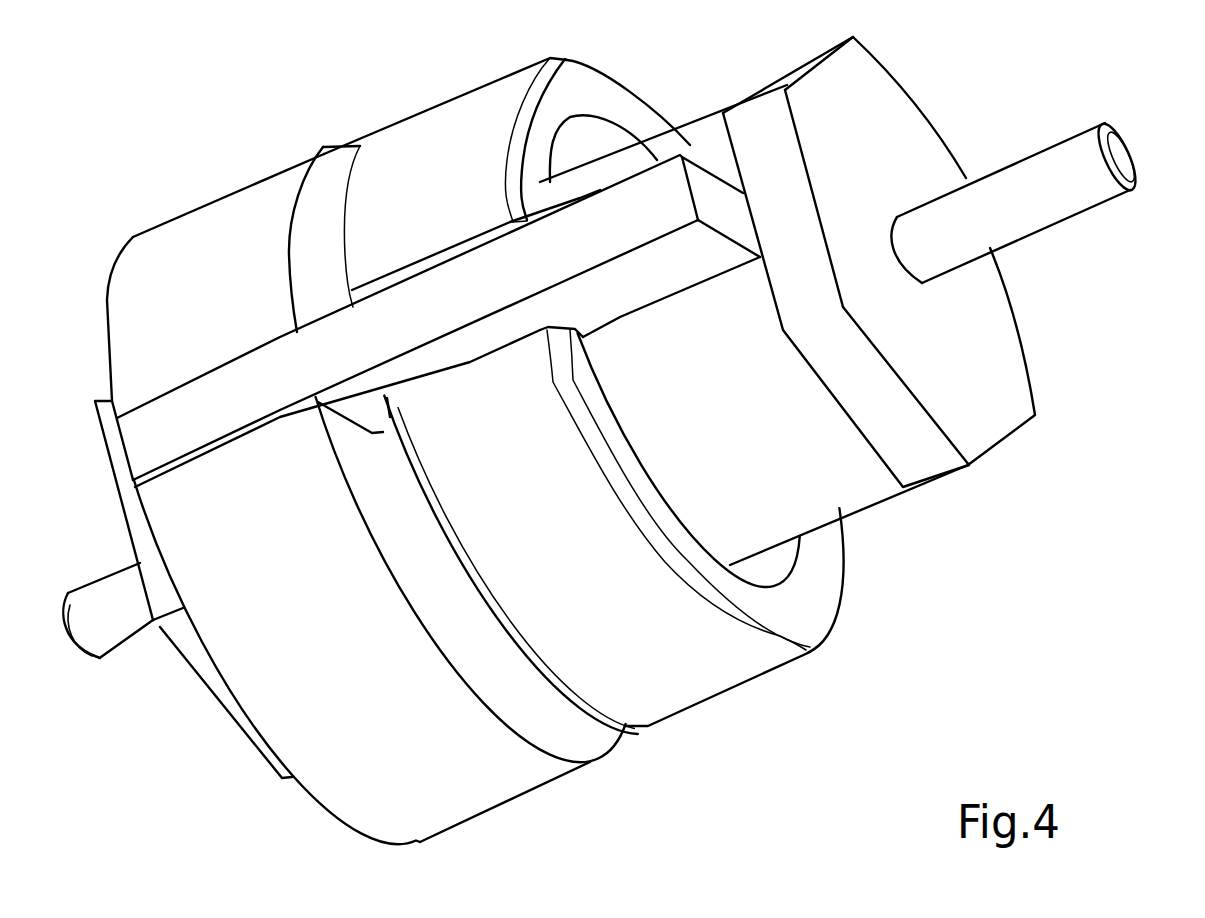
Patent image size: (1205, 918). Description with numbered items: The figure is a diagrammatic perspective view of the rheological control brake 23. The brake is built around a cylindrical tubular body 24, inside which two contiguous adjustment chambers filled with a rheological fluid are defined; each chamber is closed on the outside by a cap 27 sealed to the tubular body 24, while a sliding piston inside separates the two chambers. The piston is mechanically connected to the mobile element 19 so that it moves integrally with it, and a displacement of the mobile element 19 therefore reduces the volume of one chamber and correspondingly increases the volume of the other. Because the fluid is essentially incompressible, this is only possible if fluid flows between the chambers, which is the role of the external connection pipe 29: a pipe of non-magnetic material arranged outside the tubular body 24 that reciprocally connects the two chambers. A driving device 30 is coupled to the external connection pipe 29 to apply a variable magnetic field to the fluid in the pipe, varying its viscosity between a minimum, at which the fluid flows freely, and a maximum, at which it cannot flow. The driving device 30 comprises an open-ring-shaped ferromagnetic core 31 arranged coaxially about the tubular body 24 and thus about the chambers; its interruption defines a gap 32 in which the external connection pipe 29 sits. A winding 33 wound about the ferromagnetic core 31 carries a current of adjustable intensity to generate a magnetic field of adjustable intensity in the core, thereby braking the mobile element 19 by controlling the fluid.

The mobile element 19 is at (1088, 195).
The rheological control brake 23 is at (965, 693).
The cylindrical tubular body 24 is at (858, 482).
The cap 27 is at (202, 668).
The external connection pipe 29 is at (643, 200).
The driving device 30 is at (721, 757).
The ferromagnetic core 31 is at (888, 645).
The gap 32 is at (473, 243).
The winding 33 is at (814, 506).